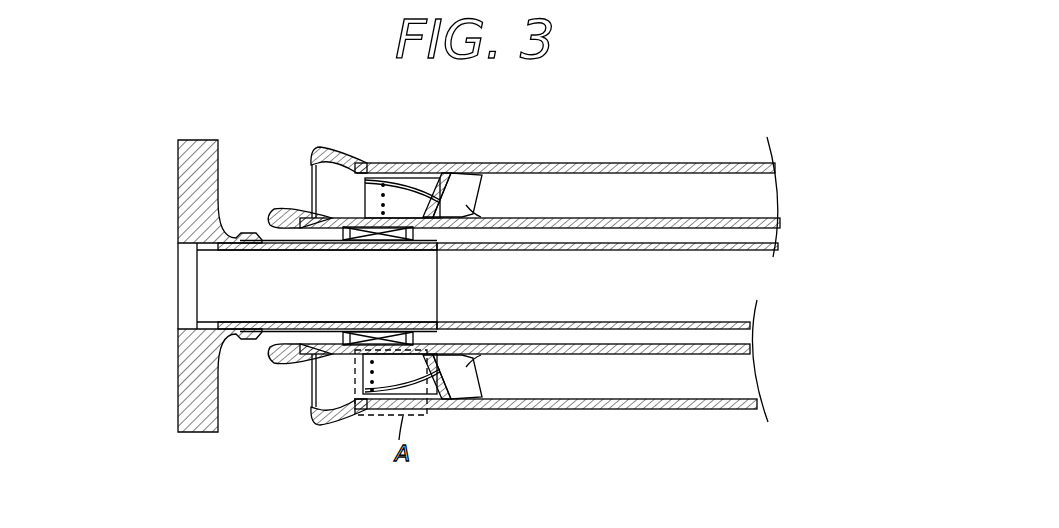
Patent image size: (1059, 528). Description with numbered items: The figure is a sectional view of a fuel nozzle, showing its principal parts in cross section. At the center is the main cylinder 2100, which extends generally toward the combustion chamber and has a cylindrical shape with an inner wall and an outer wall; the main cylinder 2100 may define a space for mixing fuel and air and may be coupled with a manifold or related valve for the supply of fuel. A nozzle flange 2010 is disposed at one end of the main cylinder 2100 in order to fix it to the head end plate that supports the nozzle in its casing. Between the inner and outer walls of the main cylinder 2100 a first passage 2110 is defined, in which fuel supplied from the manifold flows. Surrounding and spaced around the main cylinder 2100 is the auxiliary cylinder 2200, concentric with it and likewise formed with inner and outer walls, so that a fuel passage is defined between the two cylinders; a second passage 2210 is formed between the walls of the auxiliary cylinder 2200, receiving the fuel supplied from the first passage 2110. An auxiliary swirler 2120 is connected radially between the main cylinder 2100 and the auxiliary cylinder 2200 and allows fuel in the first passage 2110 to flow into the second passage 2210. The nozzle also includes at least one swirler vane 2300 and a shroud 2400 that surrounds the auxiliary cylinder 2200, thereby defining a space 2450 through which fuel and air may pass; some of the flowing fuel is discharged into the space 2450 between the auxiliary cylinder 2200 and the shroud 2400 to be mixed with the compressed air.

The nozzle flange 2010 is at (200, 142).
The main cylinder 2100 is at (592, 246).
The first passage 2110 is at (237, 340).
The auxiliary swirler 2120 is at (423, 343).
The auxiliary cylinder 2200 is at (672, 219).
The second passage 2210 is at (343, 357).
The swirler vane 2300 is at (405, 194).
The shroud 2400 is at (472, 164).
The space 2450 is at (531, 197).